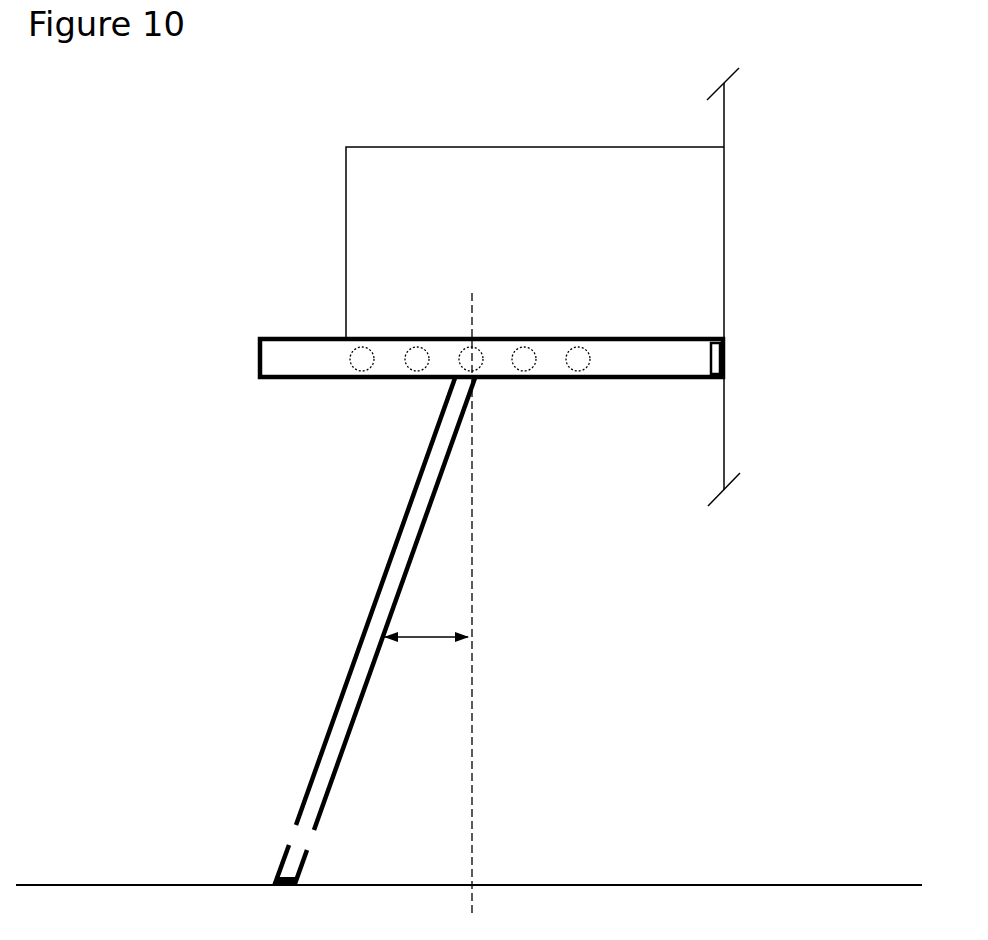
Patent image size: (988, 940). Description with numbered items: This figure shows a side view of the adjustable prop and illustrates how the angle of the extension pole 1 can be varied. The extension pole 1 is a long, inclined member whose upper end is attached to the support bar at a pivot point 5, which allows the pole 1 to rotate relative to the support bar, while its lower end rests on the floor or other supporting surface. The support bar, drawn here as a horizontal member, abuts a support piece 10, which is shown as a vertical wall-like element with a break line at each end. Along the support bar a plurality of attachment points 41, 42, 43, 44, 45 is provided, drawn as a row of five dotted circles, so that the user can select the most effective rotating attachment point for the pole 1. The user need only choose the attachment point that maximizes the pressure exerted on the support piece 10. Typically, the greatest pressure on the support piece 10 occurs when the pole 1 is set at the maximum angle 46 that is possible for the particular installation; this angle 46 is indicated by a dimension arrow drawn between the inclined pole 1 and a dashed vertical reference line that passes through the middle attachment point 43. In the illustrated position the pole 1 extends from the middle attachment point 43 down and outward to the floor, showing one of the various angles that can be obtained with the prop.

The extension pole 1 is at (338, 780).
The pivot point 5 is at (297, 337).
The support piece 10 is at (726, 356).
The attachment point 41 is at (349, 388).
The attachment point 42 is at (406, 392).
The attachment point 43 is at (486, 326).
The attachment point 44 is at (522, 390).
The attachment point 45 is at (585, 388).
The maximum angle 46 is at (426, 660).